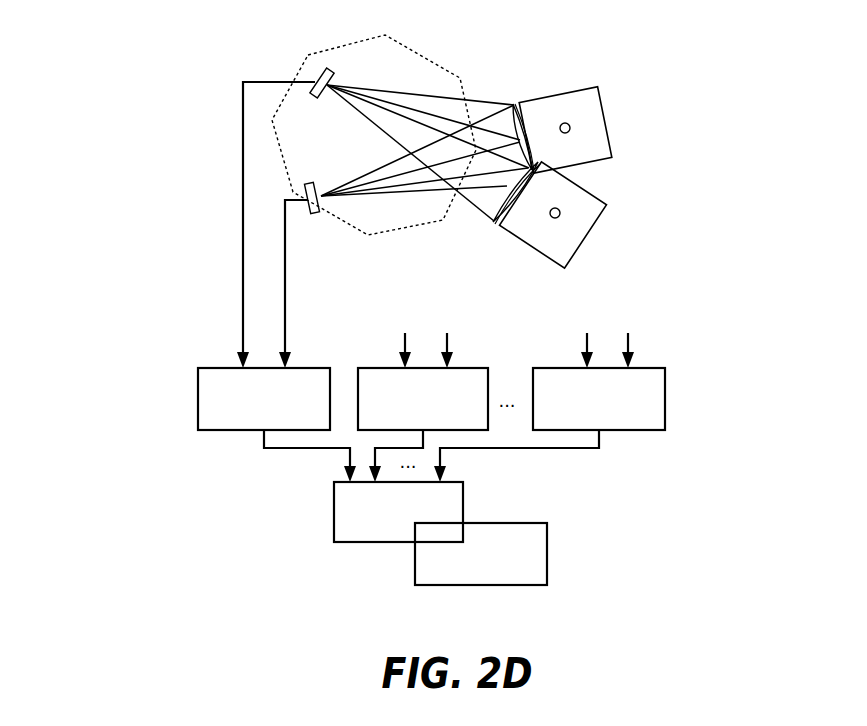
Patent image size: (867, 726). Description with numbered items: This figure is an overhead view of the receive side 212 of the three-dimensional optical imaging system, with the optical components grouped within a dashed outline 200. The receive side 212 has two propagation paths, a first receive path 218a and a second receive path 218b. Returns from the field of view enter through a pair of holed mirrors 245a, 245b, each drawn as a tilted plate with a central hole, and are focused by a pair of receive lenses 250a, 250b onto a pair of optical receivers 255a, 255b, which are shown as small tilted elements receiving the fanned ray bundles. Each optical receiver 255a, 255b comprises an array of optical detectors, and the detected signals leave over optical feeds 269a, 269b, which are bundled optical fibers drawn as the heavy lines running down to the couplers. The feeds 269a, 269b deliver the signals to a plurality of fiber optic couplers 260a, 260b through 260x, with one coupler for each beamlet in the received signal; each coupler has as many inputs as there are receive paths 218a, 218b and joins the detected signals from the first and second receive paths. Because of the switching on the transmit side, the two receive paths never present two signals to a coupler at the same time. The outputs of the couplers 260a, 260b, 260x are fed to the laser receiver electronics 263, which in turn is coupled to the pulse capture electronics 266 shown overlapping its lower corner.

The optical assembly 200 is at (305, 57).
The receive side 212 is at (126, 104).
The first receive path 218a is at (304, 306).
The second receive path 218b is at (272, 66).
The holed mirror 245a is at (597, 86).
The holed mirror 245b is at (532, 251).
The receive lens 250a is at (513, 102).
The receive lens 250b is at (491, 221).
The optical receiver 255a is at (319, 187).
The optical receiver 255b is at (319, 95).
The fiber optic coupler 260a is at (196, 367).
The fiber optic coupler 260b is at (381, 366).
The fiber optic coupler 260x is at (531, 367).
The laser receiver electronics 263 is at (333, 542).
The pulse capture electronics 266 is at (414, 586).
The optical feed 269a is at (292, 280).
The optical feed 269b is at (212, 231).